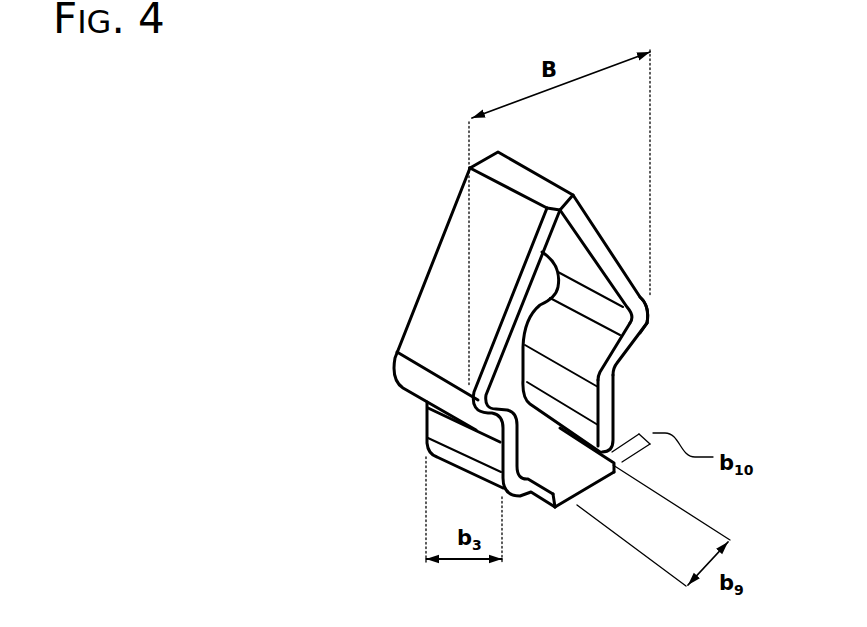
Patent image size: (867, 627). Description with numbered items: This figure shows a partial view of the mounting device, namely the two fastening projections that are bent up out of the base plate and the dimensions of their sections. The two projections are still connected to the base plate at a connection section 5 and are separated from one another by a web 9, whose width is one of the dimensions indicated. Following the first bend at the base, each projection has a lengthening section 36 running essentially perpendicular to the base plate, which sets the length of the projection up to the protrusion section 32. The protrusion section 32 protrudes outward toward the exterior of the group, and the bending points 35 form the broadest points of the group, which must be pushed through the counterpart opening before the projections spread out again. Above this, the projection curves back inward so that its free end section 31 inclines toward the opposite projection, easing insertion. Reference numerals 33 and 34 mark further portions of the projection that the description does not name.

The free end section 31 is at (438, 270).
The protrusion section 32 is at (640, 345).
The end face of tab 33 is at (428, 450).
The bend region 34 is at (608, 375).
The bending point 35 is at (402, 373).
The lengthening section 36 is at (438, 425).
The web 9 is at (575, 505).
The connection section 5 is at (545, 428).